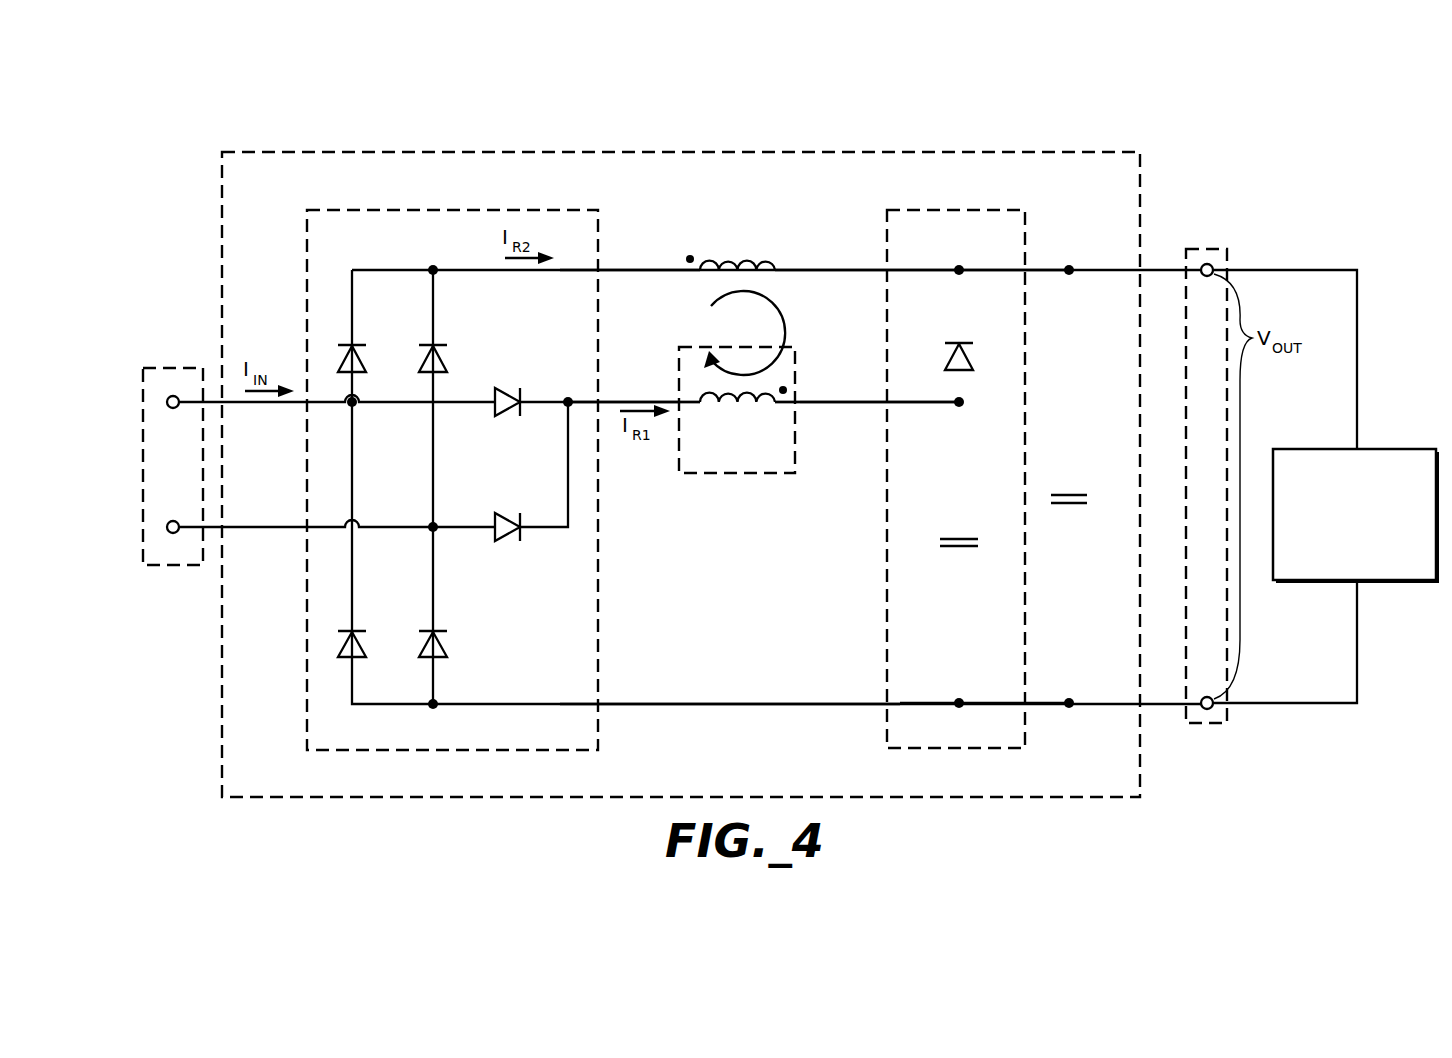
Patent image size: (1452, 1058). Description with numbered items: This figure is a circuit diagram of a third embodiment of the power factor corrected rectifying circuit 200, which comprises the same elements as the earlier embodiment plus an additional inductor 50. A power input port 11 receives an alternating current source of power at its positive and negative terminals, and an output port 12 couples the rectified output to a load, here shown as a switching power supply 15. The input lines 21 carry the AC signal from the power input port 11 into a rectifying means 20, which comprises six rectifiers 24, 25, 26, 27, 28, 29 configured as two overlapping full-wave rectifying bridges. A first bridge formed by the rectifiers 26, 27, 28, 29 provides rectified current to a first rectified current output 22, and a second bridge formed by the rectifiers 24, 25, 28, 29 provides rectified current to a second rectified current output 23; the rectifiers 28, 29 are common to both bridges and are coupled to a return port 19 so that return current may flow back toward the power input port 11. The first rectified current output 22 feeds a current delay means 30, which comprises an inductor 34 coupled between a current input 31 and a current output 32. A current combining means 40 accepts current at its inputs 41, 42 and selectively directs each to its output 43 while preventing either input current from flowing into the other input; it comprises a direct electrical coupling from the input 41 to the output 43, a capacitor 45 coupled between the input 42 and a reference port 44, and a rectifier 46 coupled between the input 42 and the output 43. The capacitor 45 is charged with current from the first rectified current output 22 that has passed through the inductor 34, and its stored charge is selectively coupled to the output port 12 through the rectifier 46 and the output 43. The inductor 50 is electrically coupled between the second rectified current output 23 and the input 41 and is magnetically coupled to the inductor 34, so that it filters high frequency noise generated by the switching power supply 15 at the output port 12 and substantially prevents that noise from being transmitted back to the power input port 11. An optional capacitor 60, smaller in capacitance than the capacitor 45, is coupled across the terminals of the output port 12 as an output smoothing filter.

The power input port 11 is at (178, 360).
The output port 12 is at (1200, 238).
The switching power supply 15 is at (1340, 449).
The return port 19 is at (598, 704).
The rectifying means 20 is at (333, 200).
The AC input lines 21 is at (304, 527).
The first rectified current output 22 is at (598, 402).
The second rectified current output 23 is at (598, 270).
The rectifier 24 is at (356, 344).
The rectifier 25 is at (437, 344).
The rectifier 26 is at (503, 390).
The rectifier 27 is at (503, 512).
The rectifier 28 is at (438, 630).
The rectifier 29 is at (358, 630).
The current delay means 30 is at (728, 485).
The current input 31 is at (679, 400).
The current output 32 is at (796, 405).
The inductor 34 is at (728, 406).
The current combining means 40 is at (950, 198).
The input 41 is at (888, 270).
The input 42 is at (888, 402).
The output 43 is at (1025, 270).
The reference port 44 is at (888, 703).
The capacitor 45 is at (955, 538).
The rectifier 46 is at (953, 342).
The inductor 50 is at (752, 262).
The capacitor 60 is at (1072, 494).
The power factor corrected rectifying circuit 200 is at (215, 770).